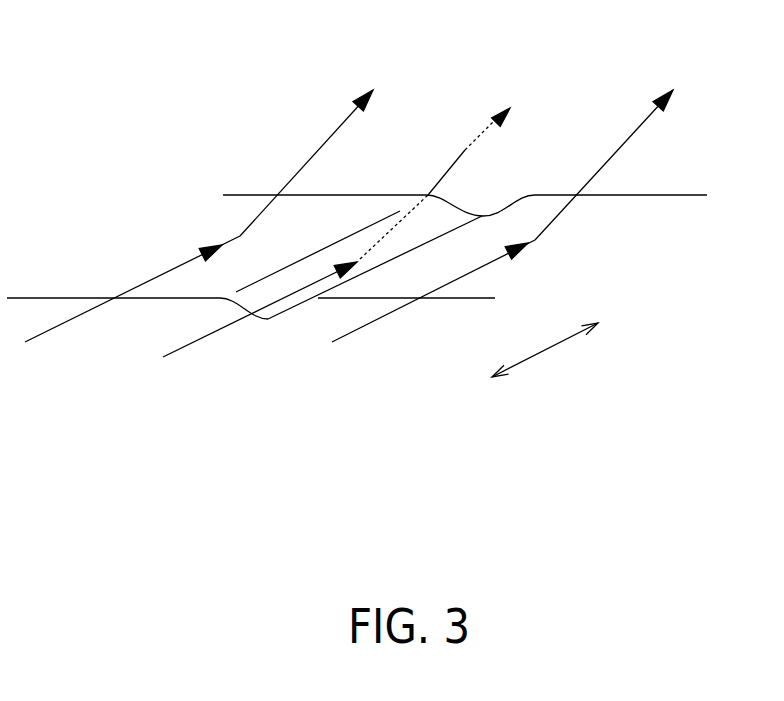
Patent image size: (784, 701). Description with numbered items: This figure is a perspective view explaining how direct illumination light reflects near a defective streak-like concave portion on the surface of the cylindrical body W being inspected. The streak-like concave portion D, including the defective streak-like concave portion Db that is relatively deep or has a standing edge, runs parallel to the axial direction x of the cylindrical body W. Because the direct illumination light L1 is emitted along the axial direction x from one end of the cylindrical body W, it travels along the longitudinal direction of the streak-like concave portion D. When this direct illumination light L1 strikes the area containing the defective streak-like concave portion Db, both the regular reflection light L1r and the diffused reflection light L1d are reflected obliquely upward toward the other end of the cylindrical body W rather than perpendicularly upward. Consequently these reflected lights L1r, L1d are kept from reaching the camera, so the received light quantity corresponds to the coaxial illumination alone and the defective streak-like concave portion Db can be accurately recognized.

The cylindrical body W is at (660, 203).
The streak-like concave portion D is at (277, 312).
The defective streak-like concave portion Db is at (359, 324).
The direct illumination light L1 is at (60, 325).
The regular reflection light L1r is at (332, 130).
The diffused reflection light L1d is at (462, 155).
The axial direction x is at (545, 353).